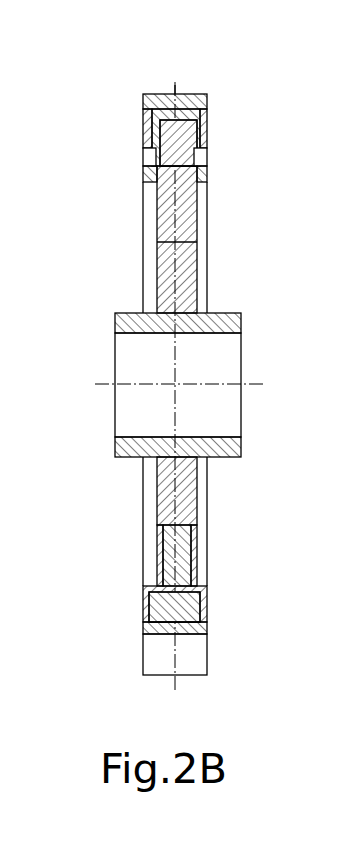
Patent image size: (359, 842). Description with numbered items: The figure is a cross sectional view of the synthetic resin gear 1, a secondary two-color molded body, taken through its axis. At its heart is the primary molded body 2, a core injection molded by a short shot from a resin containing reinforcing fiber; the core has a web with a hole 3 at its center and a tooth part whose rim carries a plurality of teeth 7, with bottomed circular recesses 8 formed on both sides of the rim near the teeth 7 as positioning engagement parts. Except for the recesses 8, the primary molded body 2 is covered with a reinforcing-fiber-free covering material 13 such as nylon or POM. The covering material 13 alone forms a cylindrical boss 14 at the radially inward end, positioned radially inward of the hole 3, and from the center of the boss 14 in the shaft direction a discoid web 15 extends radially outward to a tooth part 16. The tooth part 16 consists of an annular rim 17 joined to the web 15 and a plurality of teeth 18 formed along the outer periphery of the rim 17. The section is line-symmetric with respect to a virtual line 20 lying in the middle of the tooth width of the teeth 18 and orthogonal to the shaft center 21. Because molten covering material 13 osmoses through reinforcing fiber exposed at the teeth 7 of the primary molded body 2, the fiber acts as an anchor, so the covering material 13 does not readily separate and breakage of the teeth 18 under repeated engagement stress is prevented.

The synthetic resin gear 1 is at (153, 300).
The primary molded body 2 is at (199, 125).
The hole 3 is at (157, 265).
The teeth 7 is at (145, 109).
The recesses 8 is at (143, 160).
The covering material 13 is at (143, 132).
The cylindrical boss 14 is at (115, 320).
The web 15 is at (200, 263).
The tooth part 16 is at (110, 611).
The rim 17 is at (140, 604).
The teeth 18 is at (157, 94).
The virtual line 20 is at (175, 92).
The shaft center 21 is at (258, 384).